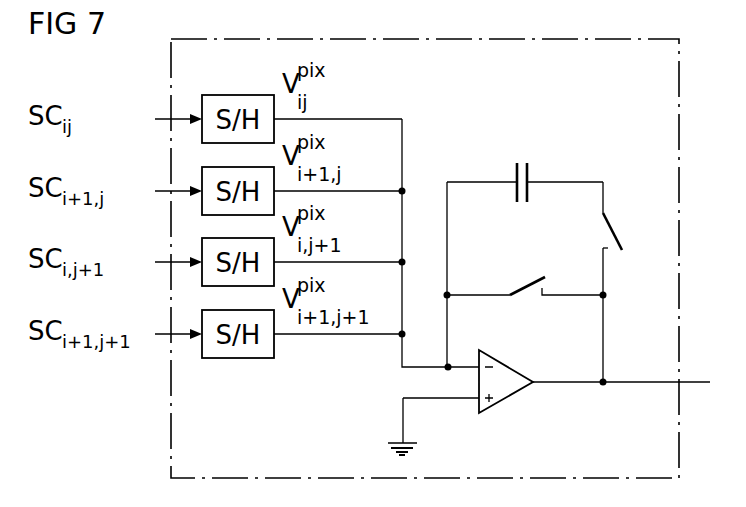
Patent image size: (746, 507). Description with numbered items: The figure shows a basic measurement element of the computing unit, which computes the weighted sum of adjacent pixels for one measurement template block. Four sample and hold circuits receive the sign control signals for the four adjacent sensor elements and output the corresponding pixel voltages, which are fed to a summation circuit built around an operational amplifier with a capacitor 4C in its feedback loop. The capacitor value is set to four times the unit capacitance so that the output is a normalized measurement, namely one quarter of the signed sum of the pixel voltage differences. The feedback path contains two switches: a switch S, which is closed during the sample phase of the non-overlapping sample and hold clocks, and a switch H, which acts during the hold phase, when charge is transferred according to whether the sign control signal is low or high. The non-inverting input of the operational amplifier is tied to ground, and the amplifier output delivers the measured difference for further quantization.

The feedback capacitor 4C is at (524, 162).
The sample phase switch S is at (519, 283).
The hold phase switch H is at (612, 228).